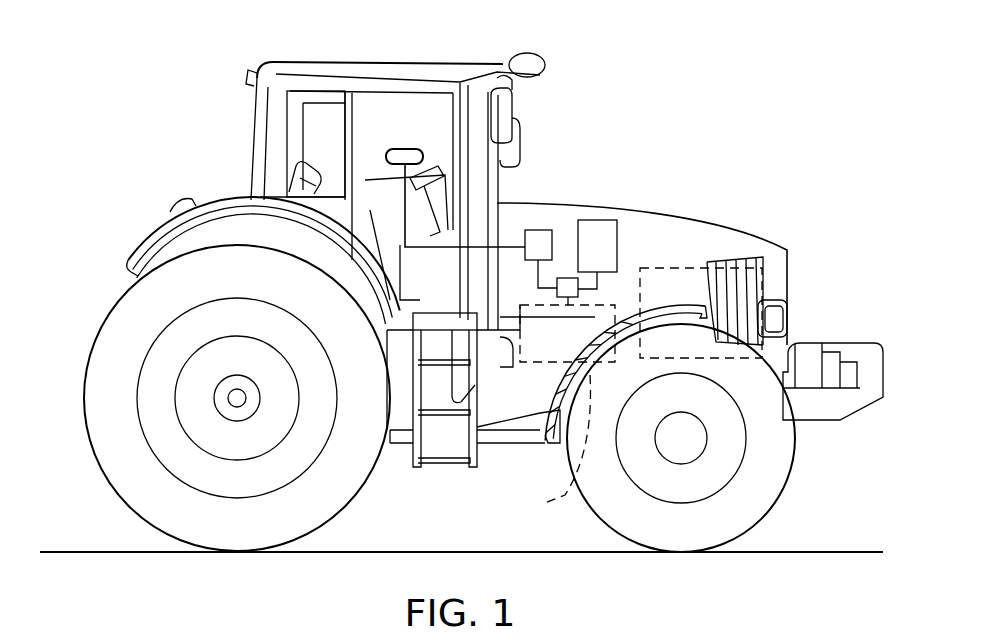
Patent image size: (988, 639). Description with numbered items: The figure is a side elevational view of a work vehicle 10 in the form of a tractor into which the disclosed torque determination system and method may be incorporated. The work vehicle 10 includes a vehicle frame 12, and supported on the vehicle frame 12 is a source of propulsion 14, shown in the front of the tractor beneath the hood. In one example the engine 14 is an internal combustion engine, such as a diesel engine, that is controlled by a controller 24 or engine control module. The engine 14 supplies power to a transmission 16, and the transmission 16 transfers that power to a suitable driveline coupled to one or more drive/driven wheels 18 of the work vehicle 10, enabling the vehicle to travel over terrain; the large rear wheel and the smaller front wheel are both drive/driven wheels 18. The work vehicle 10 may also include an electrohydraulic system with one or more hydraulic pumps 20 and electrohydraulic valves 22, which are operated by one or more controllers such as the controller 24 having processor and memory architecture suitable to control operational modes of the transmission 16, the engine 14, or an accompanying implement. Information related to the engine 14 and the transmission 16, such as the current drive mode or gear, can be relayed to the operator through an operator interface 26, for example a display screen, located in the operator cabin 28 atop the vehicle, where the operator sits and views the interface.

The work vehicle 10 is at (564, 260).
The vehicle frame 12 is at (513, 398).
The source of propulsion 14 is at (702, 262).
The transmission 16 is at (548, 448).
The drive/driven wheels 18 is at (235, 397).
The hydraulic pump 20 is at (598, 220).
The electrohydraulic valve 22 is at (563, 278).
The controller 24 is at (537, 230).
The operator interface 26 is at (407, 147).
The operator cabin 28 is at (265, 133).